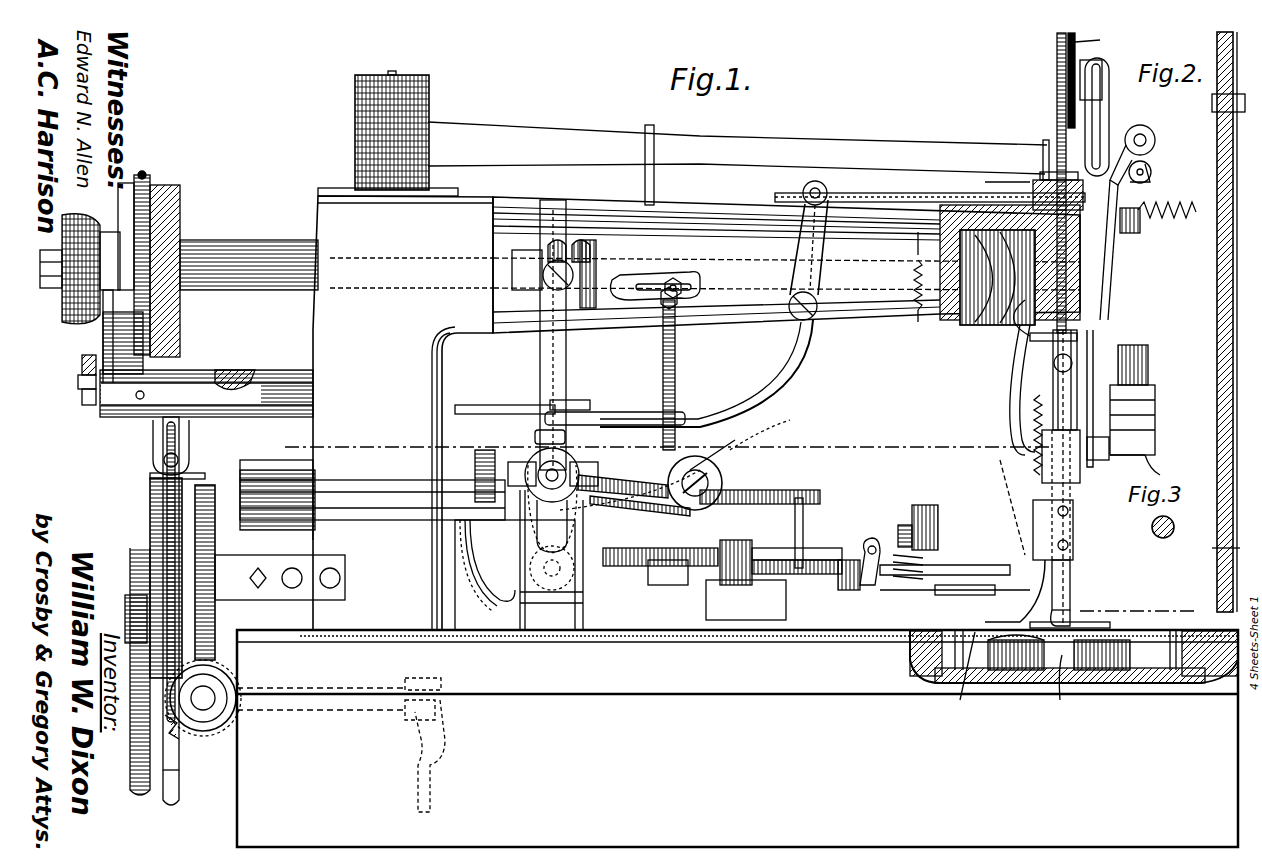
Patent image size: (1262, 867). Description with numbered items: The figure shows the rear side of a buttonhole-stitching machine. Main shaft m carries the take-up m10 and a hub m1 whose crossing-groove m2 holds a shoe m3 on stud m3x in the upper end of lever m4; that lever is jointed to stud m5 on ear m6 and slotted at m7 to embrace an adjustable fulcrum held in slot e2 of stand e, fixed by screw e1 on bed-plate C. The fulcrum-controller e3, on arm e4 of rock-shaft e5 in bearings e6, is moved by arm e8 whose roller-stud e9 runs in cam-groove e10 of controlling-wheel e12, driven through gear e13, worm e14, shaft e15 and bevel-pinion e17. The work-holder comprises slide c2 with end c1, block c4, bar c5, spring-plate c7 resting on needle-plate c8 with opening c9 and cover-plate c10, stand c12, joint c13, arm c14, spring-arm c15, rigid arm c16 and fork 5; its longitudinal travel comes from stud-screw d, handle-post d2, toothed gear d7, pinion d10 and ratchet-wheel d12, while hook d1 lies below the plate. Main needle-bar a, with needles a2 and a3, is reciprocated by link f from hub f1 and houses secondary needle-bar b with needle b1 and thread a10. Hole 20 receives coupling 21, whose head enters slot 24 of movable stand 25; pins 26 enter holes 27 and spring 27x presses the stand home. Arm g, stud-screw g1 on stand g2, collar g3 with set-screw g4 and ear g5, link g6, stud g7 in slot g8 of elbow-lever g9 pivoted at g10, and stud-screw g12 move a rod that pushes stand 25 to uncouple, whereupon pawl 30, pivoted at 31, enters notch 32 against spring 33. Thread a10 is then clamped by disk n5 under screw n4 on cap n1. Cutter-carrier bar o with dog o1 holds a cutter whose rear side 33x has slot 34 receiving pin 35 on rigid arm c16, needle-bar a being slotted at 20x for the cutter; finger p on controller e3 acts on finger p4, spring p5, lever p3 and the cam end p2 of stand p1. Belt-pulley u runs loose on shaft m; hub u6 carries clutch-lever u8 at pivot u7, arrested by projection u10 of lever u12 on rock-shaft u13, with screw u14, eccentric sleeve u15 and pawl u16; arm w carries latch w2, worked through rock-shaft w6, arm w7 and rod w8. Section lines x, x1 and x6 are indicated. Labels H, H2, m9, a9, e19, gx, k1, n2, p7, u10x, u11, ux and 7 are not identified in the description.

In FIG. 1, the bed-plate C is at (705, 620).
In FIG. 1, the table H is at (880, 625).
In FIG. 1, the overhanging arm H2 is at (786, 265).
In FIG. 1, the main shaft m is at (350, 262).
In FIG. 1, the hub m1 is at (592, 238).
In FIG. 1, the crossing-groove m2 is at (580, 240).
In FIG. 1, the shoe m3 is at (553, 240).
In FIG. 1, the stud m3x is at (505, 252).
In FIG. 1, the lever m4 is at (538, 363).
In FIG. 1, the stud m5 is at (535, 568).
In FIG. 1, the ear m6 is at (487, 572).
In FIG. 1, the slot m7 is at (536, 535).
In FIG. 1, the pin m9 is at (540, 510).
In FIG. 1, the take-up m10 is at (1010, 340).
In FIG. 1, the main needle-bar a is at (1058, 42).
In FIG. 3, the main needle-bar a is at (1225, 476).
In FIG. 1, the eye-pointed needle a2 is at (1225, 578).
In FIG. 3, the eye-pointed needle a2 is at (1225, 578).
In FIG. 1, the needle a3 is at (1045, 612).
In FIG. 1, the rod a9 is at (948, 150).
In FIG. 1, the secondary needle-thread a10 is at (1040, 180).
In FIG. 1, the secondary needle-bar b is at (1226, 392).
In FIG. 3, the secondary needle-bar b is at (1188, 530).
In FIG. 1, the eye-pointed needle b1 is at (1070, 590).
In FIG. 3, the eye-pointed needle b1 is at (1228, 598).
In FIG. 1, the slide end c1 is at (612, 600).
In FIG. 1, the slide c2 is at (745, 600).
In FIG. 1, the block c4 is at (770, 606).
In FIG. 1, the bar c5 is at (895, 595).
In FIG. 1, the spring-plate c7 is at (950, 588).
In FIG. 1, the needle-plate c8 is at (1027, 652).
In FIG. 1, the opening c9 is at (962, 577).
In FIG. 1, the cover-plate c10 is at (957, 674).
In FIG. 1, the stand c12 is at (850, 595).
In FIG. 1, the joint c13 is at (880, 555).
In FIG. 1, the arm c14 is at (948, 562).
In FIG. 1, the spring-arm c15 is at (962, 544).
In FIG. 1, the rigid arm c16 is at (1020, 545).
In FIG. 1, the stud-screw d is at (770, 550).
In FIG. 1, the hook d1 is at (1130, 652).
In FIG. 1, the handle-post d2 is at (740, 545).
In FIG. 1, the toothed gear d7 is at (825, 565).
In FIG. 1, the pinion d10 is at (712, 575).
In FIG. 1, the ratchet-wheel d12 is at (723, 622).
In FIG. 1, the stand e is at (570, 520).
In FIG. 1, the screw e1 is at (565, 596).
In FIG. 1, the slot e2 is at (560, 500).
In FIG. 1, the fulcrum-controller e3 is at (512, 462).
In FIG. 1, the arm e4 is at (490, 455).
In FIG. 1, the rock-shaft e5 is at (358, 490).
In FIG. 1, the bearings e6 is at (450, 505).
In FIG. 1, the arm e8 is at (392, 477).
In FIG. 1, the roller-stud e9 is at (192, 538).
In FIG. 1, the cam-groove e10 is at (148, 520).
In FIG. 1, the controlling-wheel e12 is at (155, 528).
In FIG. 1, the gear e13 is at (195, 615).
In FIG. 1, the worm e14 is at (225, 722).
In FIG. 1, the shaft e15 is at (205, 698).
In FIG. 1, the bevel-pinion e17 is at (168, 735).
In FIG. 1, the pin e19 is at (609, 564).
In FIG. 1, the link f is at (1035, 355).
In FIG. 1, the take-up-cam-operating hub f1 is at (945, 325).
In FIG. 1, the arm g is at (650, 495).
In FIG. 1, the stud-screw g1 is at (740, 443).
In FIG. 1, the stand g2 is at (700, 523).
In FIG. 1, the collar g3 is at (692, 462).
In FIG. 1, the set-screw g4 is at (722, 480).
In FIG. 1, the ear g5 is at (580, 468).
In FIG. 1, the link g6 is at (700, 365).
In FIG. 1, the stud g7 is at (662, 330).
In FIG. 1, the slot g8 is at (650, 280).
In FIG. 1, the elbow-lever g9 is at (760, 315).
In FIG. 1, the pivot g10 is at (808, 318).
In FIG. 1, the stud-screw g12 is at (752, 165).
In FIG. 1, the pin gx is at (631, 534).
In FIG. 1, the rod k1 is at (893, 194).
In FIG. 1, the removable cap n1 is at (1115, 330).
In FIG. 1, the guide n2 is at (1112, 310).
In FIG. 1, the screw n4 is at (1135, 365).
In FIG. 1, the disk n5 is at (1120, 350).
In FIG. 1, the cutter-carrier bar o is at (1011, 390).
In FIG. 1, the dog o1 is at (1030, 360).
In FIG. 1, the finger p is at (570, 440).
In FIG. 1, the stand p1 is at (478, 410).
In FIG. 1, the cam-shaped end p2 is at (585, 402).
In FIG. 1, the lever p3 is at (790, 370).
In FIG. 1, the finger p4 is at (628, 430).
In FIG. 1, the spring p5 is at (620, 410).
In FIG. 1, the spring p7 is at (912, 282).
In FIG. 1, the belt-pulley u is at (172, 188).
In FIG. 1, the hub u6 is at (100, 230).
In FIG. 1, the pivot u7 is at (142, 172).
In FIG. 1, the clutch-lever u8 is at (125, 182).
In FIG. 1, the projection u10 is at (120, 268).
In FIG. 1, the shaft u10x is at (250, 520).
In FIG. 1, the nut u11 is at (82, 368).
In FIG. 1, the lever u12 is at (125, 333).
In FIG. 1, the rock-shaft u13 is at (232, 380).
In FIG. 1, the screw u14 is at (78, 387).
In FIG. 1, the eccentric sleeve u15 is at (86, 402).
In FIG. 1, the pawl u16 is at (100, 322).
In FIG. 1, the pin ux is at (138, 408).
In FIG. 1, the arm w is at (180, 442).
In FIG. 1, the controlling-latch w2 is at (190, 462).
In FIG. 1, the rock-shaft w6 is at (327, 688).
In FIG. 1, the arm w7 is at (440, 684).
In FIG. 1, the rod w8 is at (442, 760).
In FIG. 3, the section line x is at (1223, 551).
In FIG. 1, the dotted section line x1 is at (310, 432).
In FIG. 3, the dotted section line x1 is at (1230, 618).
In FIG. 1, the section line x6 is at (817, 176).
In FIG. 1, the fork 5 is at (1016, 620).
In FIG. 1, the bracket 7 is at (480, 575).
In FIG. 1, the hole 20 is at (1056, 100).
In FIG. 2, the hole 20 is at (1216, 100).
In FIG. 3, the hole 20 is at (1163, 538).
In FIG. 1, the slot 20x is at (1080, 478).
In FIG. 3, the slot 20x is at (1222, 495).
In FIG. 1, the coupling 21 is at (1090, 71).
In FIG. 2, the coupling 21 is at (1216, 110).
In FIG. 1, the slot 24 is at (1108, 117).
In FIG. 1, the movable stand 25 is at (1127, 218).
In FIG. 1, the pins 26 is at (1033, 186).
In FIG. 1, the holes 27 is at (1045, 228).
In FIG. 1, the spring 27x is at (1128, 390).
In FIG. 1, the pawl 30 is at (1105, 245).
In FIG. 1, the pivot 31 is at (1086, 235).
In FIG. 1, the notch 32 is at (1235, 296).
In FIG. 1, the spring 33 is at (1105, 230).
In FIG. 1, the cutter rear side 33x is at (1030, 500).
In FIG. 1, the slot 34 is at (1016, 543).
In FIG. 1, the pin 35 is at (1044, 535).